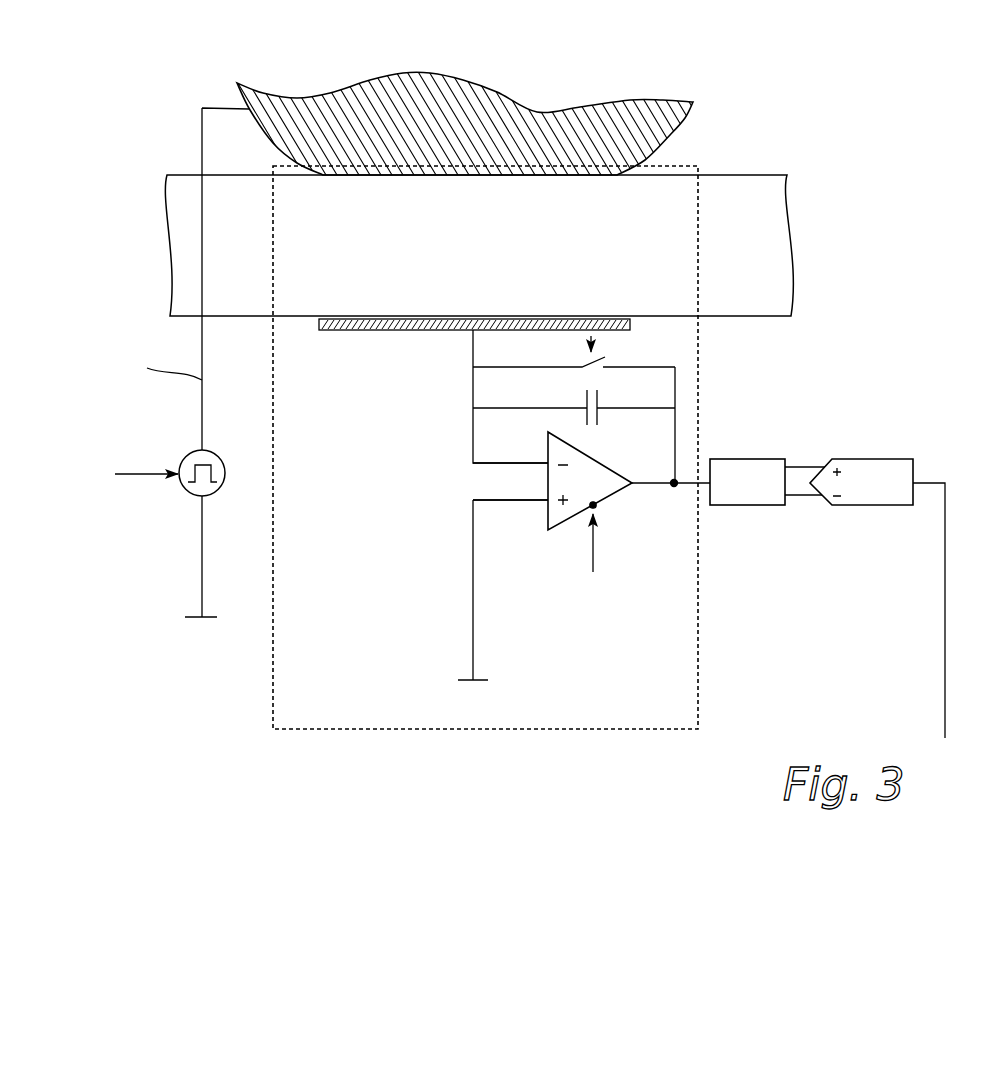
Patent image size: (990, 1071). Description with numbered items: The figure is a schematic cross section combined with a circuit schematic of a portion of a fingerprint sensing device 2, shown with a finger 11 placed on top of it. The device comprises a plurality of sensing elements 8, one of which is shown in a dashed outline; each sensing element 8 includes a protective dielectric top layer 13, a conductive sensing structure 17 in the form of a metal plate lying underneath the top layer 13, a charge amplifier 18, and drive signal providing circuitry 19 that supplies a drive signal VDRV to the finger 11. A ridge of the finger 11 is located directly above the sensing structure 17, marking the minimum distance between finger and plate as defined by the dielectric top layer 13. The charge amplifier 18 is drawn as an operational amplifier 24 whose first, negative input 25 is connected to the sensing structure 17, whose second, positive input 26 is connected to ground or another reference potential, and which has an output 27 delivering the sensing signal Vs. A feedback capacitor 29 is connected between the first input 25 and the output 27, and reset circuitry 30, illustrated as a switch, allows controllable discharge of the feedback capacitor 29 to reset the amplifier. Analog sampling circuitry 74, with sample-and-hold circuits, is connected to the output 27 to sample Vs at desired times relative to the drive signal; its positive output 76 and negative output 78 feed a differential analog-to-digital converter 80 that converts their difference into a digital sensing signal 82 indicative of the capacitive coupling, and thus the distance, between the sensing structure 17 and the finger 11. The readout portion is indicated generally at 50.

The fingerprint sensing device 2 is at (796, 128).
The sensing element 8 is at (296, 619).
The finger 11 is at (537, 130).
The protective dielectric top layer 13 is at (230, 297).
The conductive sensing structure 17 is at (388, 330).
The charge amplifier 18 is at (440, 489).
The drive signal providing circuitry 19 is at (186, 497).
The operational amplifier 24 is at (563, 532).
The first input 25 is at (547, 462).
The second input 26 is at (547, 503).
The output 27 is at (635, 487).
The feedback capacitor 29 is at (600, 412).
The reset circuitry 30 is at (587, 365).
The readout circuitry 50 is at (609, 672).
The analog sampling circuitry 74 is at (743, 459).
The positive output 76 is at (795, 467).
The negative output 78 is at (790, 498).
The differential analog-to-digital converter 80 is at (867, 459).
The digital sensing signal 82 is at (933, 487).